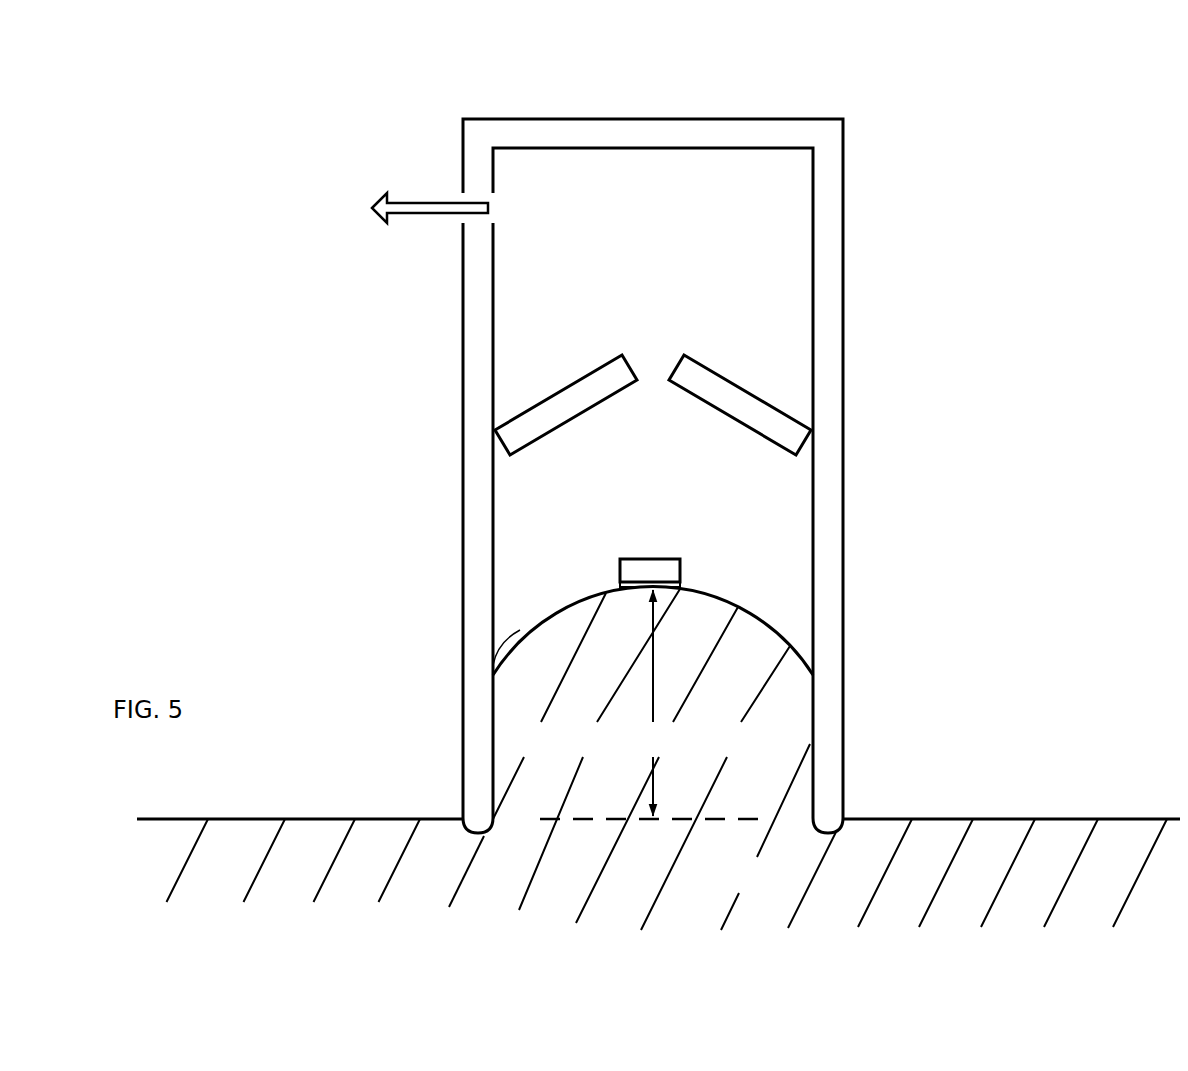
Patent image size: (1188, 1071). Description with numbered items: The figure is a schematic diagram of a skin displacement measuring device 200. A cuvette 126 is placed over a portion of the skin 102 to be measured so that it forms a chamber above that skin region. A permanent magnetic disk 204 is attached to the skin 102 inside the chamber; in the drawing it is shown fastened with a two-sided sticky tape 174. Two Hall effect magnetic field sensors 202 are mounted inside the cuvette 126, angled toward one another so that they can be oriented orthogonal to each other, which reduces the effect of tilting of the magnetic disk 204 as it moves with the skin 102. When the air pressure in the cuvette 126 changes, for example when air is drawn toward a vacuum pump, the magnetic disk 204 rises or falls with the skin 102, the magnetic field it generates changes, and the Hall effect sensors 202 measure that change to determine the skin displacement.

The skin displacement measuring device 200 is at (624, 435).
The Hall effect magnetic field sensor 202 is at (883, 367).
The permanent magnetic disk 204 is at (619, 570).
The two sided sticky tape 174 is at (845, 616).
The cuvette 126 is at (849, 760).
The skin 102 is at (533, 731).